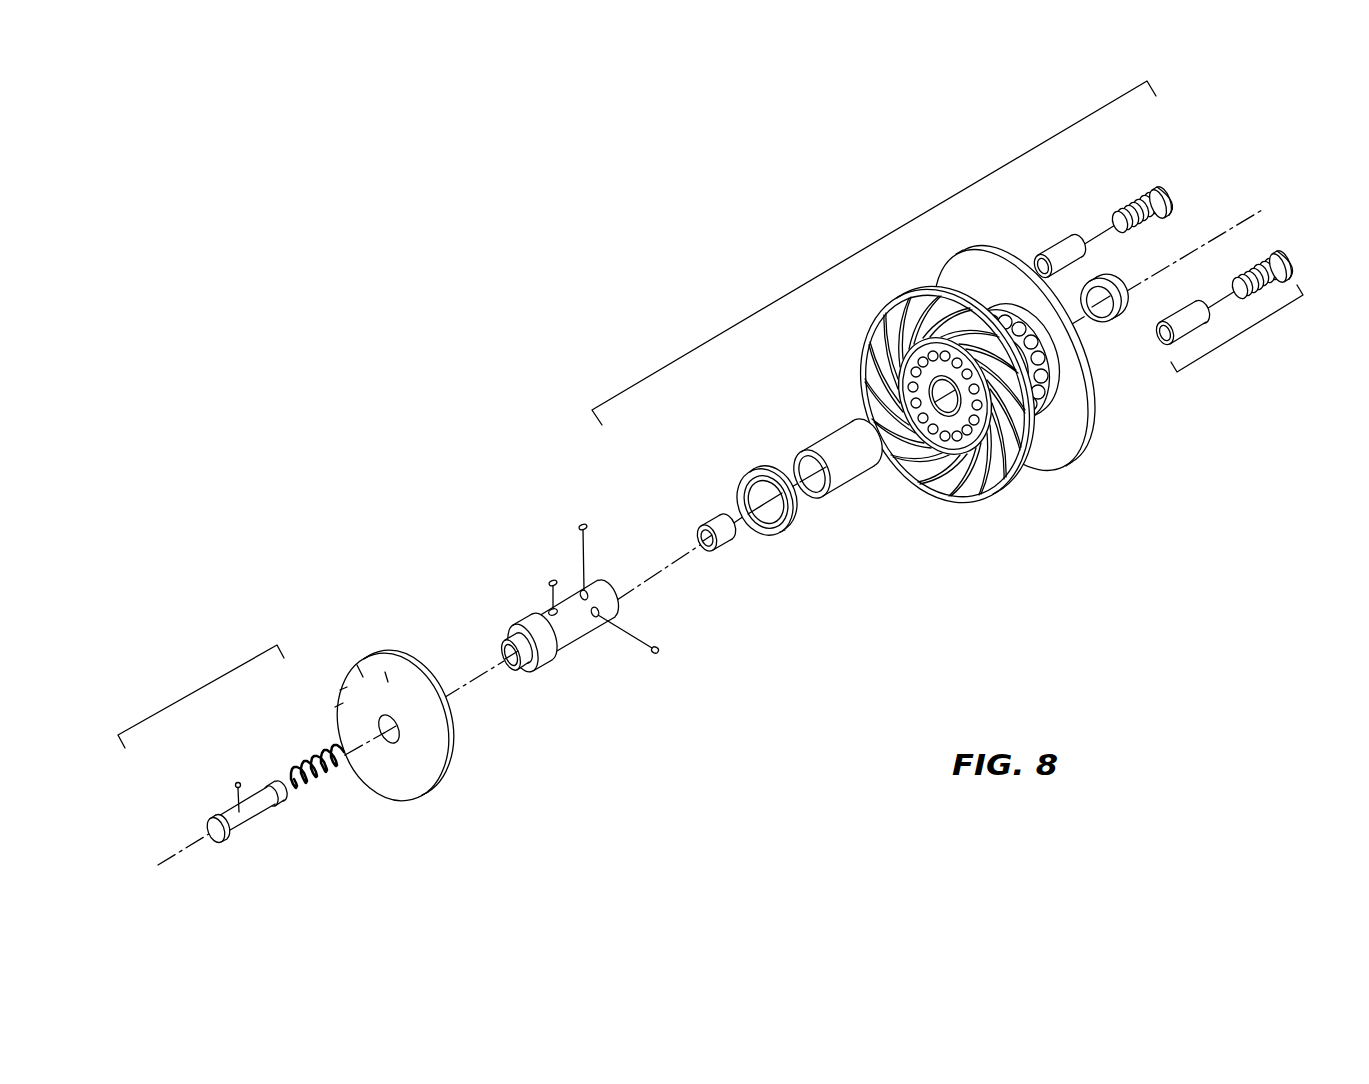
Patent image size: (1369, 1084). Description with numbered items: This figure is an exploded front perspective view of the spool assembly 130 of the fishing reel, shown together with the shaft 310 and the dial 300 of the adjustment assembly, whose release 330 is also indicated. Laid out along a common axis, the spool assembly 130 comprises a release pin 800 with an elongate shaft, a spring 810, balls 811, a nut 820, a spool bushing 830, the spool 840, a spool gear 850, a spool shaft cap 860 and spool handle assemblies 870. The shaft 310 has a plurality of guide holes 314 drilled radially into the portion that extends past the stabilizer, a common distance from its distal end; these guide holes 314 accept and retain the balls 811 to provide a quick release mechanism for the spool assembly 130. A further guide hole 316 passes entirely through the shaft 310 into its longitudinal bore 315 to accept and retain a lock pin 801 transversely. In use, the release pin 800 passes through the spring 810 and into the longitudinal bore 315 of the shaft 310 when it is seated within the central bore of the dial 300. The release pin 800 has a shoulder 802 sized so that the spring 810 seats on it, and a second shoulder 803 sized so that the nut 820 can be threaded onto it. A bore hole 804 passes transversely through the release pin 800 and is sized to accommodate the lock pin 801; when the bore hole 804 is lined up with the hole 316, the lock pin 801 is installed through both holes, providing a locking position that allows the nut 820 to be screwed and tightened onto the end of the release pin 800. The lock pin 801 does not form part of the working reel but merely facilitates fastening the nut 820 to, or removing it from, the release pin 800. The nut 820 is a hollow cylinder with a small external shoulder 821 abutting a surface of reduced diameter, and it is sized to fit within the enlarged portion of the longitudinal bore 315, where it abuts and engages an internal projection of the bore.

The spool assembly 130 is at (874, 353).
The dial 300 is at (453, 765).
The shaft 310 is at (550, 606).
The guide holes 314 is at (582, 590).
The longitudinal bore 315 is at (513, 672).
The guide hole 316 is at (550, 610).
The release 330 is at (264, 738).
The release pin 800 is at (243, 791).
The lock pin 801 is at (237, 785).
The shoulder 802 is at (215, 824).
The shoulder 803 is at (277, 792).
The bore hole 804 is at (260, 810).
The spring 810 is at (330, 777).
The balls 811 is at (583, 523).
The nut 820 is at (717, 549).
The external shoulder 821 is at (722, 547).
The spool bushing 830 is at (840, 433).
The spool 840 is at (1002, 500).
The spool gear 850 is at (787, 533).
The spool shaft cap 860 is at (1115, 280).
The spool handle assemblies 870 is at (1220, 347).